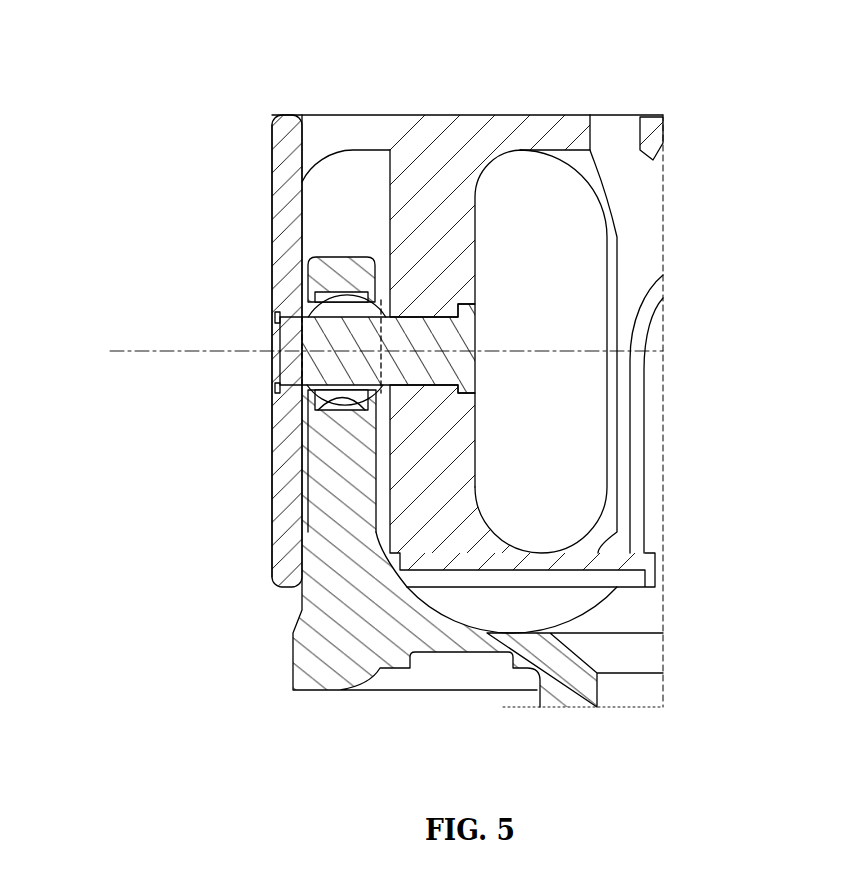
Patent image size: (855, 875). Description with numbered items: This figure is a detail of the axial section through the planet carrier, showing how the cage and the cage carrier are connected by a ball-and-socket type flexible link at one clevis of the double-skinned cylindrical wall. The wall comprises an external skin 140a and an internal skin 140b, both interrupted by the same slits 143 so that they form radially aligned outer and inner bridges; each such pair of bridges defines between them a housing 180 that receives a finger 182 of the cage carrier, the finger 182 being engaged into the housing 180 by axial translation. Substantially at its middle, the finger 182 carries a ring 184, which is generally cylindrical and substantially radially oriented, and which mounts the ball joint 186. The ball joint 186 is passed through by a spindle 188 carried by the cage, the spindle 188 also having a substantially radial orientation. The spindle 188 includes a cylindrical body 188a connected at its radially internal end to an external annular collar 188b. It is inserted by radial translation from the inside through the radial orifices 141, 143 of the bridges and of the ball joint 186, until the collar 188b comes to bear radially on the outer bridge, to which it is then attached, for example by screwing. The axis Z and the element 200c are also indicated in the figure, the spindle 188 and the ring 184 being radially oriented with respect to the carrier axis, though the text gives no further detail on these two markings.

The axis Z is at (130, 351).
The external skin 140a is at (287, 273).
The internal skin 140b is at (453, 220).
The radial orifice 141 is at (274, 331).
The slit 143 is at (382, 300).
The housing 180 is at (347, 188).
The finger 182 is at (327, 262).
The ring 184 is at (346, 392).
The ball joint 186 is at (335, 313).
The spindle 188 is at (293, 360).
The cylindrical body 188a is at (440, 398).
The external annular collar 188b is at (475, 385).
The shaft 200c is at (445, 340).